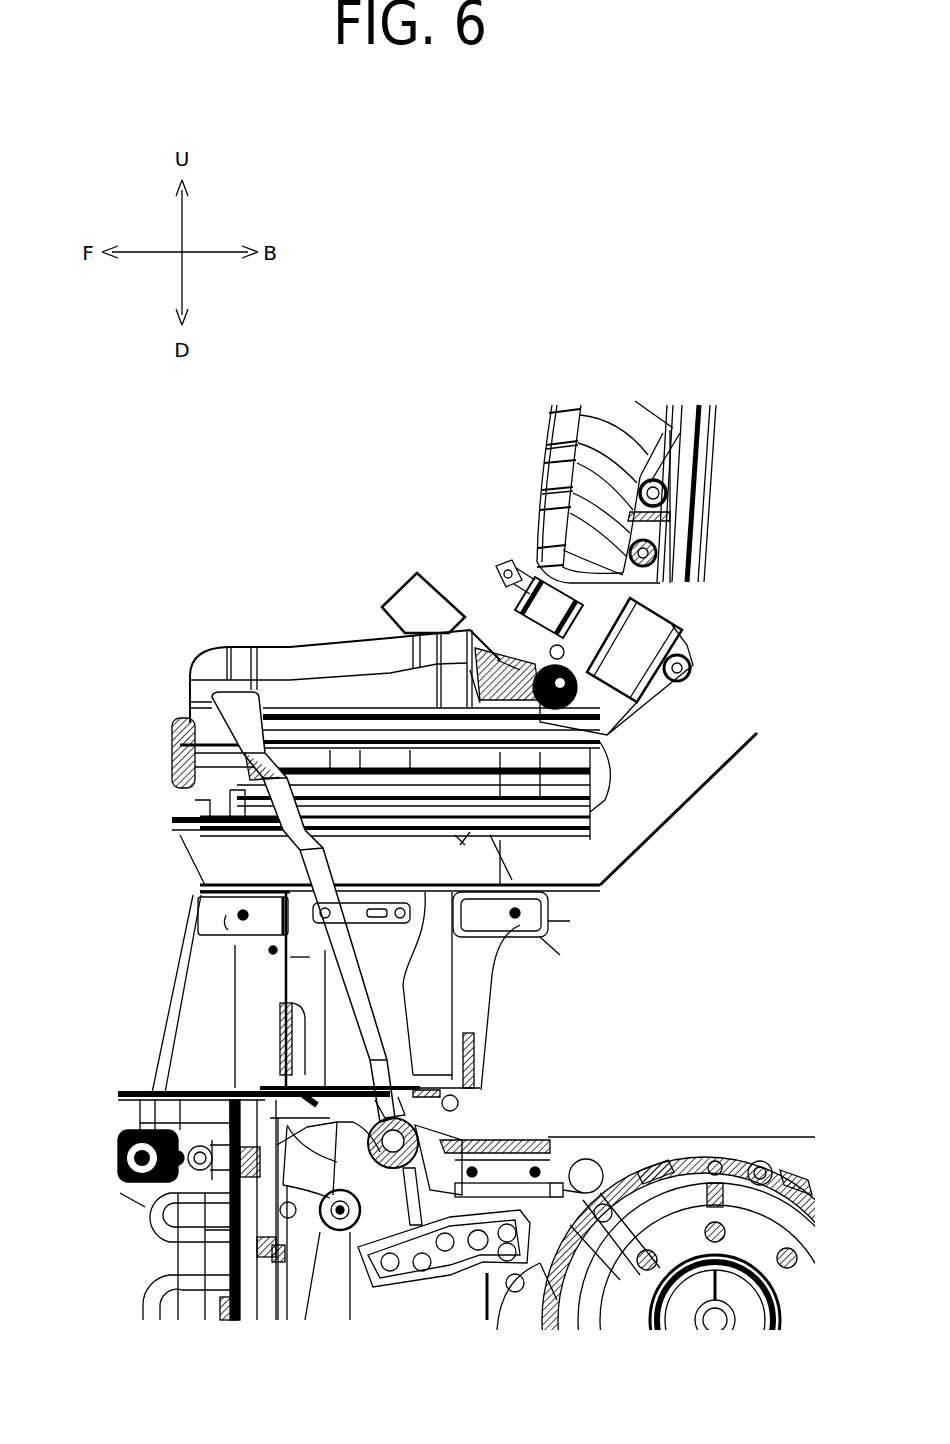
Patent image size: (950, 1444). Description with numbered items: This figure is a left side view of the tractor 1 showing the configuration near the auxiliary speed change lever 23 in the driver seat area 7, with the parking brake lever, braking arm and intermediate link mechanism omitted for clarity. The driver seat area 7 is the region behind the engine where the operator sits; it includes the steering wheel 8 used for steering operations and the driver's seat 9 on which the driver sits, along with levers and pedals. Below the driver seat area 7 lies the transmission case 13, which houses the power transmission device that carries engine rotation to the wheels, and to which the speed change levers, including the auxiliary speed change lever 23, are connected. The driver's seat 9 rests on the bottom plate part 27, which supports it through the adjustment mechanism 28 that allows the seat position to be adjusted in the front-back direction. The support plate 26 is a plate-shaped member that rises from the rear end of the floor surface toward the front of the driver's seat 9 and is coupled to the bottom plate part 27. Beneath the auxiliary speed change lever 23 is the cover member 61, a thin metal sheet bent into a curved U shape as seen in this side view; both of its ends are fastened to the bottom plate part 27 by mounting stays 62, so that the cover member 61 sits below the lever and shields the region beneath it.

The tractor 1 is at (680, 325).
The driver seat area 7 is at (378, 447).
The steering wheel 8 is at (689, 803).
The driver's seat 9 is at (352, 664).
The transmission case 13 is at (653, 1136).
The auxiliary speed change lever 23 is at (238, 718).
The support plate 26 is at (197, 935).
The bottom plate part 27 is at (578, 898).
The adjustment mechanism 28 is at (152, 804).
The cover member 61 is at (457, 993).
The mounting stay 62 is at (287, 937).